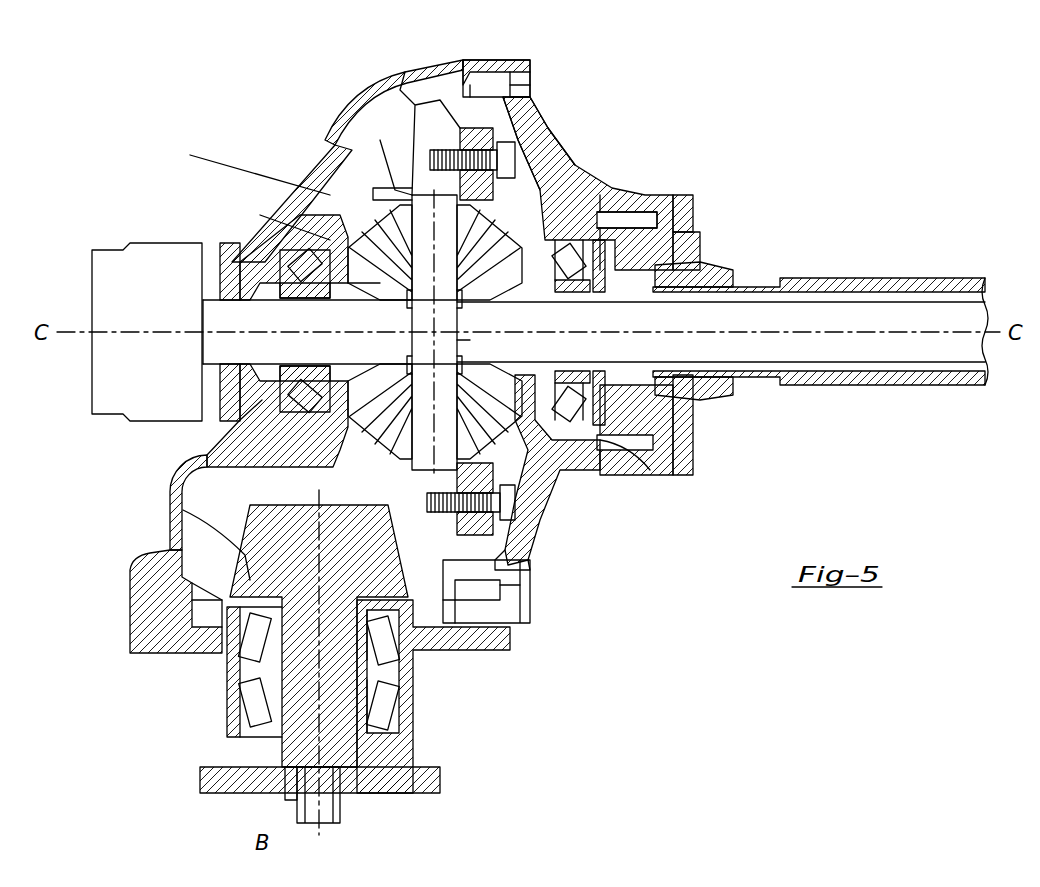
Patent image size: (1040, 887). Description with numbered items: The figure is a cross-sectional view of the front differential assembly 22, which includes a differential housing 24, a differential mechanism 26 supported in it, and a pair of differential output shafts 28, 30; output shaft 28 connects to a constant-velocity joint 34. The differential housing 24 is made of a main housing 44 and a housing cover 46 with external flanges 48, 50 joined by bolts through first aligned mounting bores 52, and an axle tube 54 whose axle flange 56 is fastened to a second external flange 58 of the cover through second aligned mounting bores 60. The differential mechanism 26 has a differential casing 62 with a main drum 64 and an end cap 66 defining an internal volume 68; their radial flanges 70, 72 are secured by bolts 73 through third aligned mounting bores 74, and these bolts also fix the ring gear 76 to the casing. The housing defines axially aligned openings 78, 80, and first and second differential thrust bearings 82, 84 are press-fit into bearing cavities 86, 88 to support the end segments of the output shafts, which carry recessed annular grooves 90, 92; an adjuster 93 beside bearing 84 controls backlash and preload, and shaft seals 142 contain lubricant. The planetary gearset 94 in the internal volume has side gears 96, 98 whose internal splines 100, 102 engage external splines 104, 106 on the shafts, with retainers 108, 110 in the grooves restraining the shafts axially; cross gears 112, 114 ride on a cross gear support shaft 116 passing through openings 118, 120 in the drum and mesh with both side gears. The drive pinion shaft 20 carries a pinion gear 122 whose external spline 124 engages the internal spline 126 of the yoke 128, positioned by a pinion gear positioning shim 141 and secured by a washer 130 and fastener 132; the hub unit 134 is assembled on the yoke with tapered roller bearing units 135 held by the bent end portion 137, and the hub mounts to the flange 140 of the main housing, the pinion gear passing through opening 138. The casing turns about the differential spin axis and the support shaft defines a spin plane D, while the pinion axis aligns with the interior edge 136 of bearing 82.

The drive pinion shaft 20 is at (280, 678).
The front differential assembly 22 is at (674, 85).
The differential housing 24 is at (440, 78).
The differential mechanism 26 is at (355, 150).
The differential output shaft 28 is at (222, 243).
The differential output shaft 30 is at (932, 302).
The constant-velocity joint 34 is at (92, 243).
The main housing 44 is at (335, 145).
The housing cover 46 is at (580, 170).
The external flange 48 is at (500, 60).
The external flange 50 is at (530, 72).
The first aligned mounting bores 52 is at (530, 90).
The axle tube 54 is at (860, 278).
The axle flange 56 is at (690, 195).
The second external flange 58 is at (645, 195).
The second aligned mounting bores 60 is at (700, 235).
The differential casing 62 is at (545, 475).
The main drum 64 is at (350, 468).
The end cap 66 is at (560, 175).
The internal volume 68 is at (395, 286).
The radial flange 70 is at (440, 100).
The radial flange 72 is at (520, 130).
The bolts 73 is at (550, 150).
The third aligned mounting bores 74 is at (520, 545).
The ring gear 76 is at (395, 190).
The opening 78 is at (243, 375).
The opening 80 is at (680, 275).
The first differential thrust bearing 82 is at (290, 262).
The second differential thrust bearing 84 is at (640, 440).
The bearing cavity 86 is at (300, 410).
The bearing cavity 88 is at (600, 440).
The recessed annular groove 90 is at (434, 332).
The recessed annular groove 92 is at (480, 295).
The adjuster 93 is at (655, 220).
The planetary gearset 94 is at (360, 200).
The side gear 96 is at (385, 392).
The side gear 98 is at (510, 392).
The internal splines 100 is at (300, 360).
The internal splines 102 is at (600, 371).
The external splines 104 is at (365, 300).
The external splines 106 is at (575, 292).
The retainer 108 is at (400, 290).
The retainer 110 is at (470, 345).
The cross gear 112 is at (414, 205).
The cross gear 114 is at (446, 392).
The cross gear support shaft 116 is at (446, 282).
The opening 118 is at (430, 160).
The opening 120 is at (427, 500).
The pinion gear 122 is at (176, 495).
The external spline 124 is at (255, 715).
The internal spline 126 is at (400, 700).
The yoke 128 is at (440, 780).
The washer 130 is at (285, 790).
The fastener 132 is at (340, 800).
The hub unit 134 is at (415, 660).
The tapered roller bearing units 135 is at (395, 640).
The interior edge 136 is at (300, 364).
The end portion 137 is at (220, 610).
The opening 138 is at (140, 590).
The flange 140 is at (130, 580).
The pinion gear positioning shim 141 is at (455, 605).
The shaft seals 142 is at (240, 262).
The support shaft spin plane D is at (462, 300).